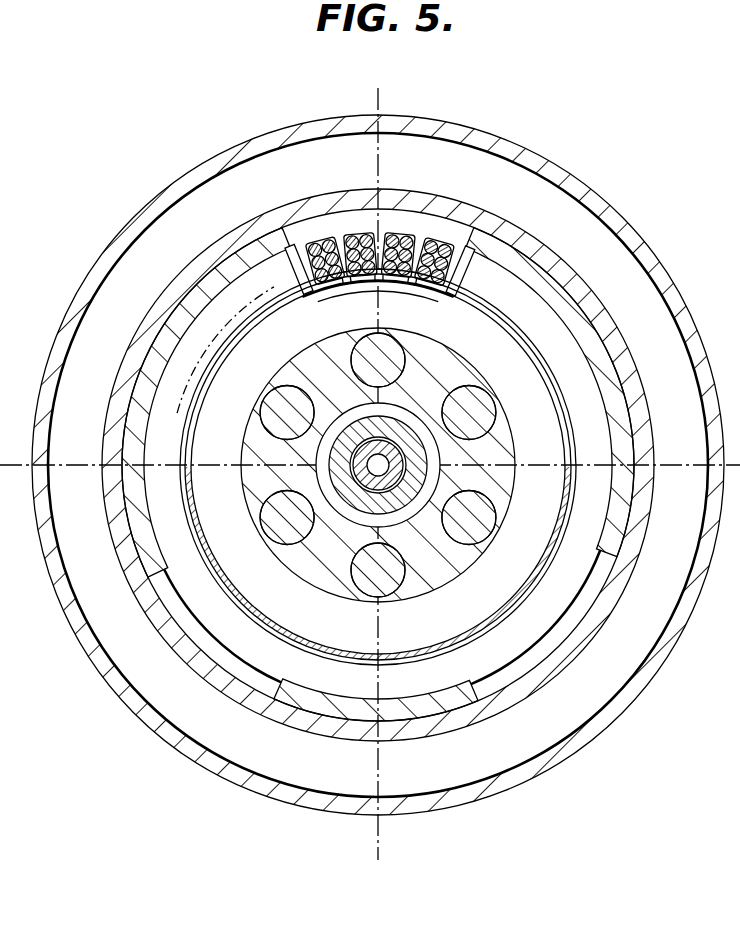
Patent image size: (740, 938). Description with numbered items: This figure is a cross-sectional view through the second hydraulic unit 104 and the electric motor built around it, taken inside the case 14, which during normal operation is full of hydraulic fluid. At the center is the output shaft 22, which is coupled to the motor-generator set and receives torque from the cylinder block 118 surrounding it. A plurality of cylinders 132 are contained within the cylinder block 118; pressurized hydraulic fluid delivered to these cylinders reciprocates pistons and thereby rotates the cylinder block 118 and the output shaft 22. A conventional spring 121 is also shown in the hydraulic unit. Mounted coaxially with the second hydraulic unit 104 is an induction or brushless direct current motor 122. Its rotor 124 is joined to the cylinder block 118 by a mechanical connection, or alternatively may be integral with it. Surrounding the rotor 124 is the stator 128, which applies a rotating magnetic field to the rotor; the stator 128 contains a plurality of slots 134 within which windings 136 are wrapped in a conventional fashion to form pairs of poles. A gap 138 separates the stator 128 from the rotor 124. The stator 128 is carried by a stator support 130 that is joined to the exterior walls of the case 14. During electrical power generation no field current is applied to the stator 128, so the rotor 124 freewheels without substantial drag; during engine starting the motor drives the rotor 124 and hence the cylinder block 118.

The case 14 is at (554, 176).
The output shaft 22 is at (352, 500).
The second hydraulic unit 104 is at (292, 378).
The cylinder block 118 is at (265, 475).
The spring 121 is at (398, 518).
The induction or brushless direct current motor 122 is at (538, 236).
The rotor 124 is at (548, 497).
The stator 128 is at (440, 230).
The stator support 130 is at (590, 300).
The cylinders 132 is at (478, 528).
The slots 134 is at (328, 232).
The windings 136 is at (362, 238).
The gap 138 is at (560, 413).